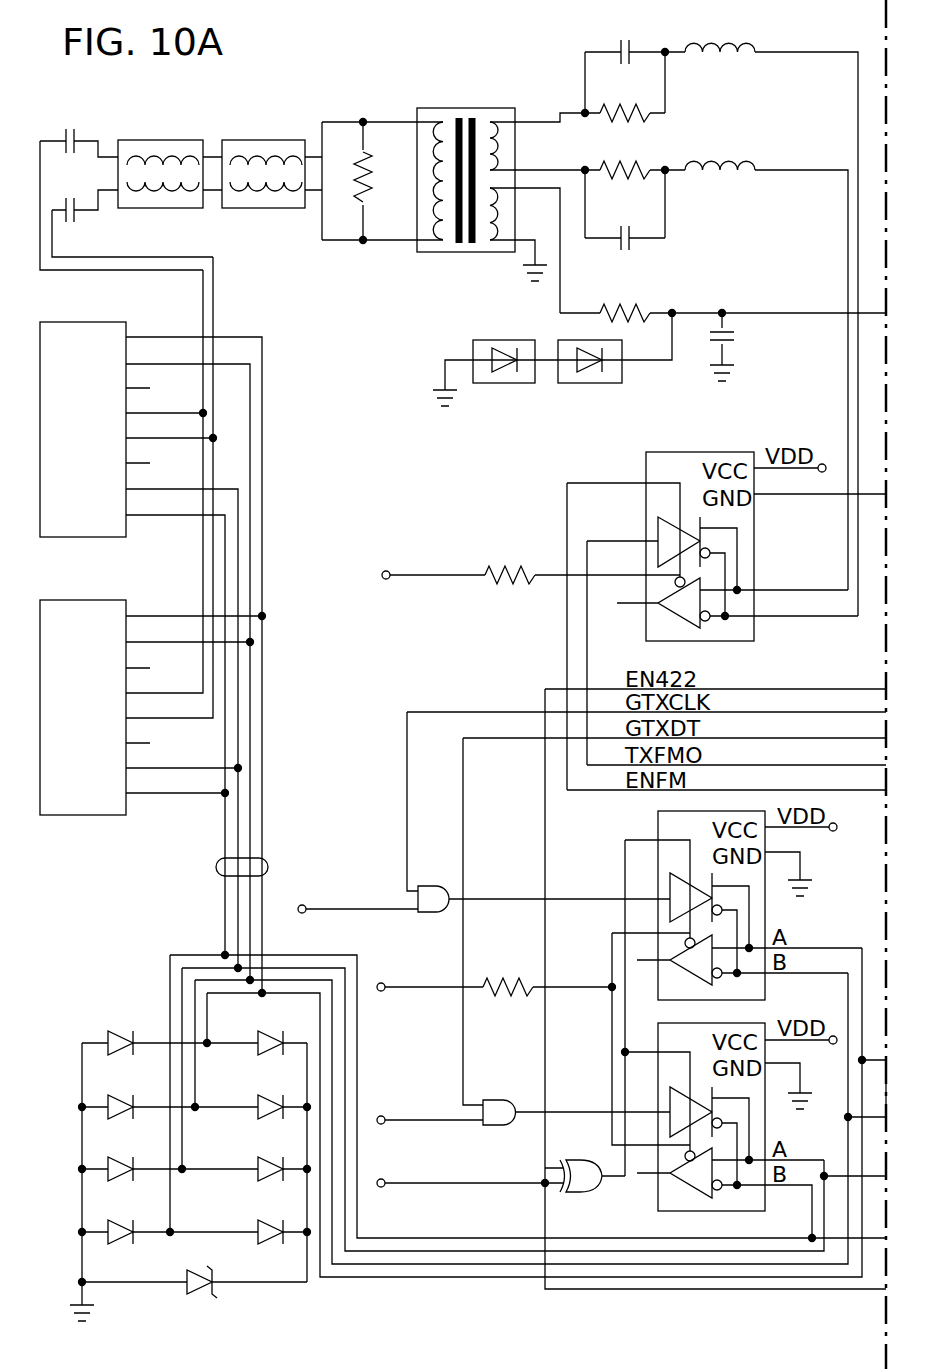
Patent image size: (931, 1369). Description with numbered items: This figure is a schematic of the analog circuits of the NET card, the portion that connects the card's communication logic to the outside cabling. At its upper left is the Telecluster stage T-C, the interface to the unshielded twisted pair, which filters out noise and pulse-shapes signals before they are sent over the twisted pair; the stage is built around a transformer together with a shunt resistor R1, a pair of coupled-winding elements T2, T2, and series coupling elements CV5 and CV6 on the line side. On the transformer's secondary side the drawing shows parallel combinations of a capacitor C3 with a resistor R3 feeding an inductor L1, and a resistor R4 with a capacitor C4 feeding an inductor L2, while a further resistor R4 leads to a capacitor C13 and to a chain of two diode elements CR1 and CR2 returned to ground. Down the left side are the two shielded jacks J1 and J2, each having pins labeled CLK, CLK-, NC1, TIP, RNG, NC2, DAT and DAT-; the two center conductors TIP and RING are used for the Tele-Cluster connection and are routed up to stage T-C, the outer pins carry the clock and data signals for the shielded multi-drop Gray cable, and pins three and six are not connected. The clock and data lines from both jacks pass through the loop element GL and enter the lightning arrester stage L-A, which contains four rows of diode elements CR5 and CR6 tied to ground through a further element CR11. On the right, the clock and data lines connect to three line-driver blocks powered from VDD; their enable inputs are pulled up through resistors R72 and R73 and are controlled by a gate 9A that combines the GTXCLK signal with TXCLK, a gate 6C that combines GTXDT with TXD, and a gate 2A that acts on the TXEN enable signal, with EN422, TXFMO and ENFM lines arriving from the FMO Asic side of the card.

The capacitor CV5 is at (121, 185).
The capacitor CV6 is at (130, 214).
The common-mode choke T2 is at (220, 177).
The resistor R1 is at (382, 181).
The Telecluster stage T-C is at (350, 25).
The capacitor C3 is at (627, 62).
The resistor R3 is at (624, 98).
The inductor L1 is at (761, 312).
The resistor R4 is at (723, 227).
The inductor L2 is at (756, 357).
The capacitor C4 is at (625, 226).
The capacitor C13 is at (747, 347).
The diode CR1 is at (484, 377).
The diode CR2 is at (603, 364).
The RJ45 jack J1 is at (80, 320).
The RJ45 jack J2 is at (80, 600).
The guard loop GL is at (218, 865).
The lightning arrester stage L-A is at (70, 1327).
The diode CR5 is at (169, 1124).
The diode CR6 is at (279, 1124).
The zener diode CR11 is at (193, 1270).
The pull-up resistor R72 is at (531, 562).
The pull-up resistor R73 is at (533, 1039).
The AND gate 9A is at (484, 888).
The AND gate 6C is at (523, 1101).
The XOR gate 2A is at (501, 1165).